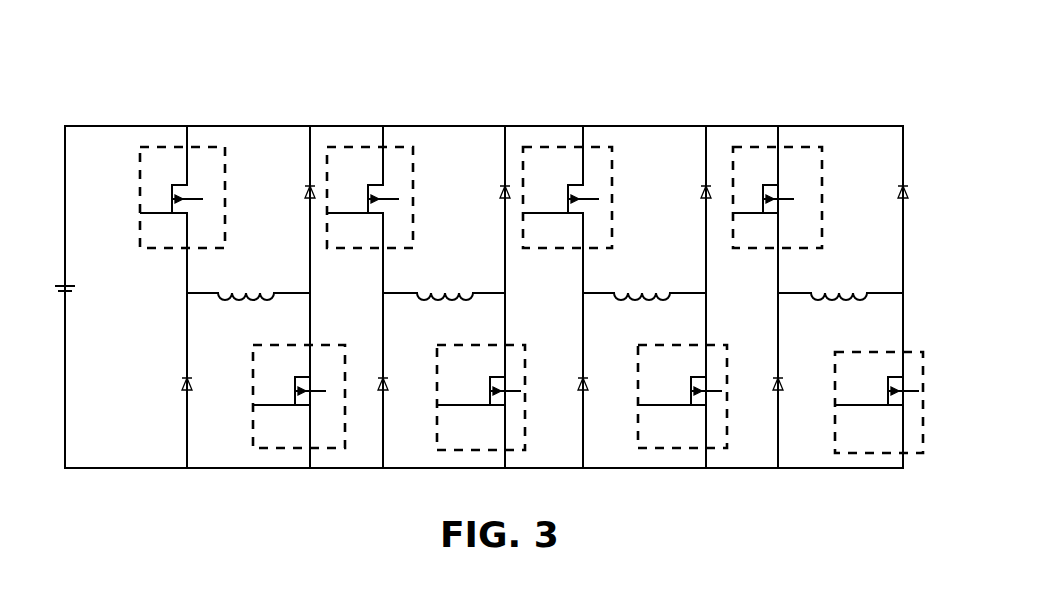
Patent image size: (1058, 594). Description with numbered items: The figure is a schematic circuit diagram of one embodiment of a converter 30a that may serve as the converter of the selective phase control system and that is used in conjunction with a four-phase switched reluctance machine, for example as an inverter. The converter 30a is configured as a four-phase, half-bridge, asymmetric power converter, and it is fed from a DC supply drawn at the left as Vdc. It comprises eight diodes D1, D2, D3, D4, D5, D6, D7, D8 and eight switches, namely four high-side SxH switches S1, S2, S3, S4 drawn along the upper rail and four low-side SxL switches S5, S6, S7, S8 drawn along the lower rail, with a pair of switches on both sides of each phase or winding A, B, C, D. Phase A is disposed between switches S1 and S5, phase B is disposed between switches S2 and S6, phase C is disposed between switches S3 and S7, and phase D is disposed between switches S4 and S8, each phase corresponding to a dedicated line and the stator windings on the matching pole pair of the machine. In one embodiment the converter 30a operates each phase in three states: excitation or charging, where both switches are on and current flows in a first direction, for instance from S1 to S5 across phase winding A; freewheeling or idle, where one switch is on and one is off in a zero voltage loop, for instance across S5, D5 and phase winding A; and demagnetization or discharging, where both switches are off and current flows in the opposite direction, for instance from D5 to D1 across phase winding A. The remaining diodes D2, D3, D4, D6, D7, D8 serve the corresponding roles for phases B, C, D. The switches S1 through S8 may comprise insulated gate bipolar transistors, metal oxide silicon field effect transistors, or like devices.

The converter 30a is at (160, 73).
The high-side switch S1 is at (182, 297).
The high-side switch S2 is at (370, 297).
The high-side switch S3 is at (567, 297).
The high-side switch S4 is at (777, 209).
The low-side switch S5 is at (299, 380).
The low-side switch S6 is at (481, 380).
The low-side switch S7 is at (682, 380).
The low-side switch S8 is at (879, 380).
The diode D1 is at (289, 191).
The diode D2 is at (488, 191).
The diode D3 is at (686, 191).
The diode D4 is at (882, 191).
The diode D5 is at (169, 387).
The diode D6 is at (366, 387).
The diode D7 is at (566, 387).
The diode D8 is at (762, 387).
The phase winding A is at (244, 275).
The phase winding B is at (443, 275).
The phase winding C is at (642, 275).
The phase winding D is at (840, 275).
The high-side switches SxH is at (94, 193).
The low-side switches SxL is at (218, 402).
The DC voltage source Vdc is at (47, 285).